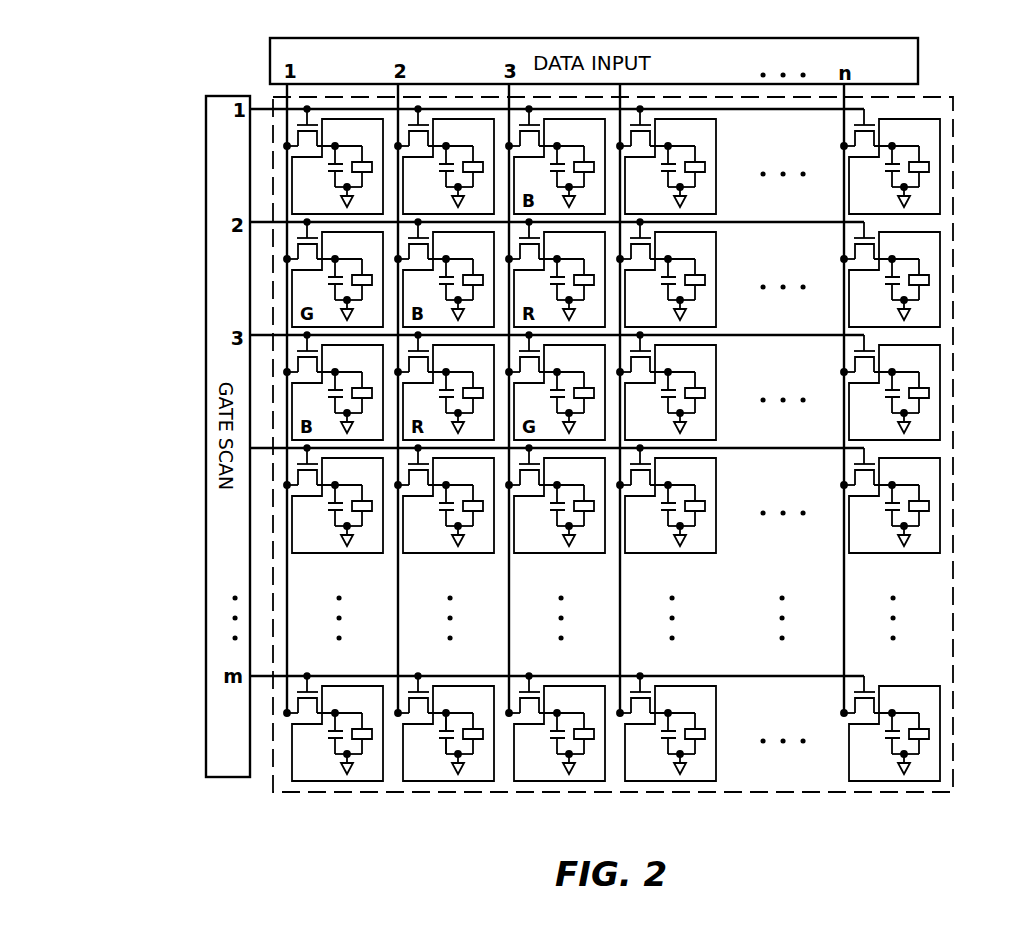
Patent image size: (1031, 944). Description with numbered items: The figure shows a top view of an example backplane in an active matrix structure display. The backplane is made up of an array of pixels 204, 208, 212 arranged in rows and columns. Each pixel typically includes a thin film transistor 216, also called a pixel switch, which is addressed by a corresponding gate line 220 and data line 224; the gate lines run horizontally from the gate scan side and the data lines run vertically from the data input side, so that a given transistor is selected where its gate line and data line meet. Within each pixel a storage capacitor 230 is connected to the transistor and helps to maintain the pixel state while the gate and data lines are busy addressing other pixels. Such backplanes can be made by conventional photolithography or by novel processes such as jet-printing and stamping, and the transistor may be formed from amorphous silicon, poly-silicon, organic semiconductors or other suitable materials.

The pixel 204 is at (295, 184).
The pixel 208 is at (468, 123).
The pixel 212 is at (939, 159).
The thin film transistor 216 is at (416, 722).
The gate line 220 is at (268, 222).
The data line 224 is at (285, 92).
The storage capacitor 230 is at (443, 740).